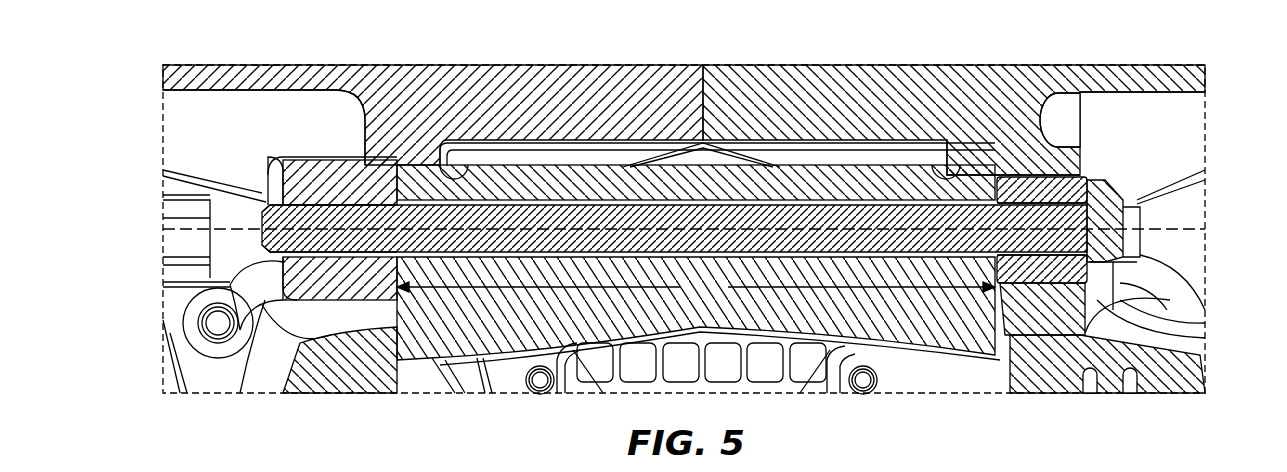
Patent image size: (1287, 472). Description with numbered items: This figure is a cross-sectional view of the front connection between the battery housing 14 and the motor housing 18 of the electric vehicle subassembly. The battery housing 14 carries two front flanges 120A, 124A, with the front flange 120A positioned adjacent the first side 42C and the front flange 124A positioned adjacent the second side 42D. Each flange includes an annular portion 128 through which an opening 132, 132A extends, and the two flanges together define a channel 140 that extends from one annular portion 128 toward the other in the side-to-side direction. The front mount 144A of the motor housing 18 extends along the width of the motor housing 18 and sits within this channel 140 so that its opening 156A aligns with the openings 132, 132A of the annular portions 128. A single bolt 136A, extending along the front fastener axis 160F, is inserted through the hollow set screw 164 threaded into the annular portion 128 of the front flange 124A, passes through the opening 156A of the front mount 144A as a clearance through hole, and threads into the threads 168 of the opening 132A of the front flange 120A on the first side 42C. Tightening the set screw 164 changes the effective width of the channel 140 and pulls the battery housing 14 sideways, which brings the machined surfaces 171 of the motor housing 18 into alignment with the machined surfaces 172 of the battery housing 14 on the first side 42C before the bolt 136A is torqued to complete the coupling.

The battery housing 14 is at (1123, 80).
The motor housing 18 is at (1087, 382).
The first side 42C is at (178, 78).
The second side 42D is at (1192, 78).
The front flange 120A is at (337, 226).
The front flange 124A is at (1077, 158).
The annular portion 128 is at (306, 170).
The opening 132 is at (1036, 220).
The opening 132A is at (328, 225).
The bolt 136A is at (726, 205).
The channel 140 is at (455, 180).
The front mount 144A is at (558, 190).
The opening 156A is at (607, 218).
The front fastener axis 160F is at (1167, 236).
The set screw 164 is at (1003, 180).
The threads 168 is at (357, 175).
The machined surfaces 171 is at (392, 310).
The machined surfaces 172 is at (424, 305).